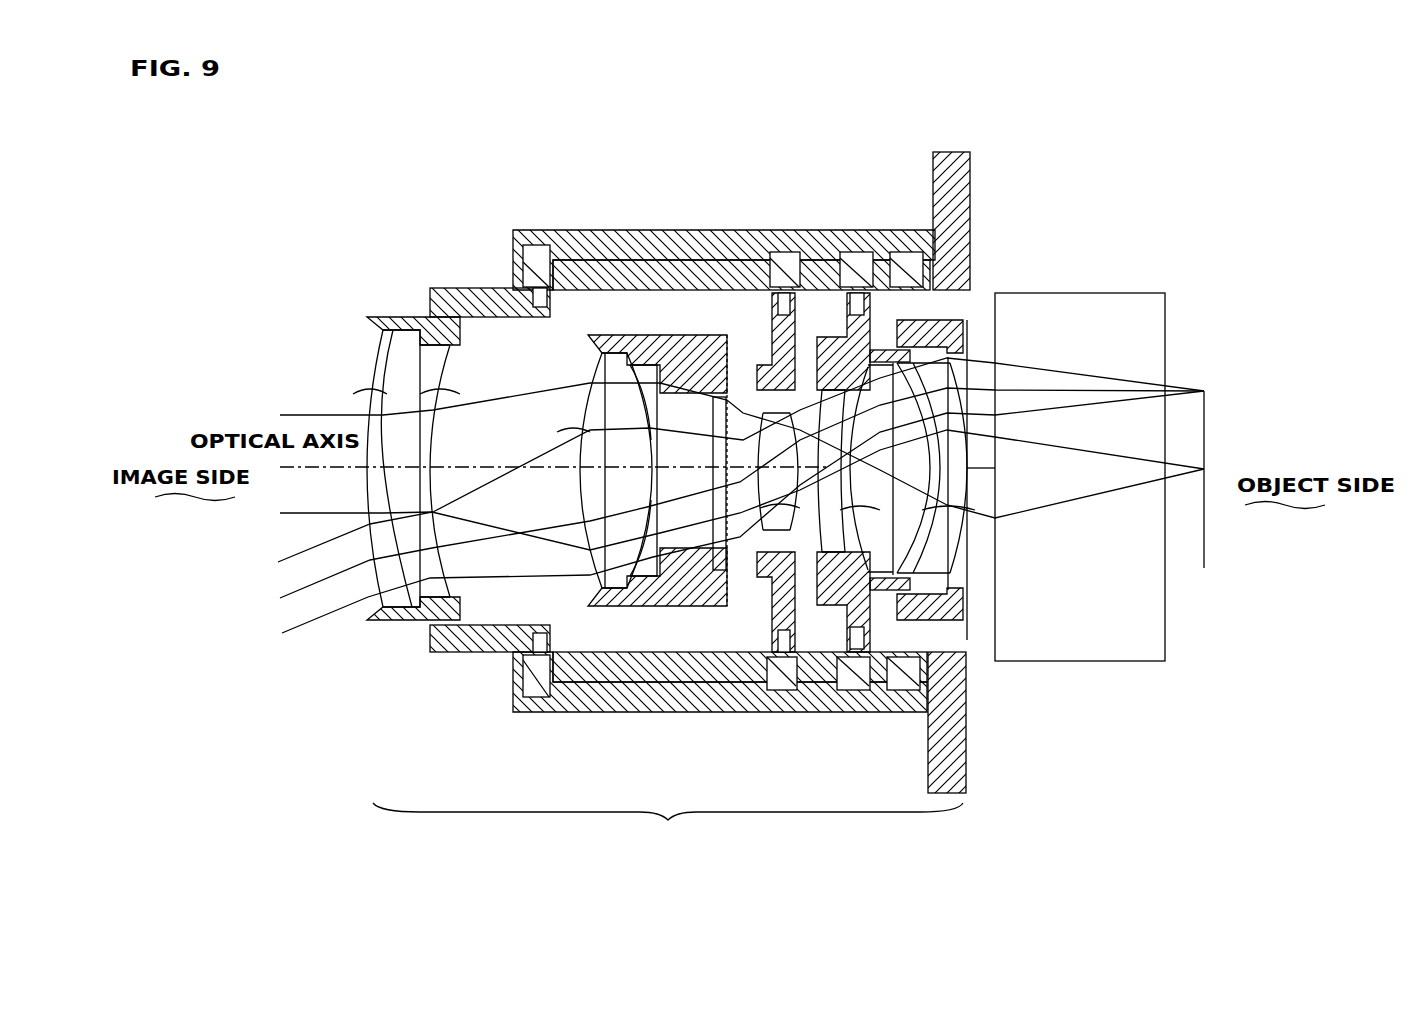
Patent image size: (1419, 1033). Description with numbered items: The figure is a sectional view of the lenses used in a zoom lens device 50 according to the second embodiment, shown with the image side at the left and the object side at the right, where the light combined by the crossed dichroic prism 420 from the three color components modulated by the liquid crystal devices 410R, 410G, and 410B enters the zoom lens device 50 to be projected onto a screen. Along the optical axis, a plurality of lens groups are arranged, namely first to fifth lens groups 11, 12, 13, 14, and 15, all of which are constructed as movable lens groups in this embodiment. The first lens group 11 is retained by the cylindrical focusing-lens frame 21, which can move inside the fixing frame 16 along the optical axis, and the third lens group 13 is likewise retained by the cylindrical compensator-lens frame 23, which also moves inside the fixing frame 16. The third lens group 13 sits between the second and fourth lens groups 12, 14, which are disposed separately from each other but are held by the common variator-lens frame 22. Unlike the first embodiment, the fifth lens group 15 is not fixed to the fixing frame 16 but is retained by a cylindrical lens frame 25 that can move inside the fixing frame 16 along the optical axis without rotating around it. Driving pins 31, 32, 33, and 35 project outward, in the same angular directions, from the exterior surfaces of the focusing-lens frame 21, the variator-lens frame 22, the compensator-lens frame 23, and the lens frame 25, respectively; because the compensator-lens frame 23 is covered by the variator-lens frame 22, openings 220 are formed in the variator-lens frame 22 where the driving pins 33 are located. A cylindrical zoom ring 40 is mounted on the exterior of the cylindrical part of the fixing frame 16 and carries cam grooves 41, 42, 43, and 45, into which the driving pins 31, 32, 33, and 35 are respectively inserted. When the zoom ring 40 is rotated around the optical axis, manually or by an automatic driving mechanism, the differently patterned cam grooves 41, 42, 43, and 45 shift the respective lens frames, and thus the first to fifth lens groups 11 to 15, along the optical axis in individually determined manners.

The first lens group 11 is at (413, 372).
The second lens group 12 is at (617, 357).
The third lens group 13 is at (930, 655).
The fourth lens group 14 is at (905, 603).
The fifth lens group 15 is at (955, 593).
The fixing frame 16 is at (753, 272).
The focusing-lens frame 21 is at (430, 617).
The variator-lens frame 22 is at (940, 312).
The compensator-lens frame 23 is at (758, 575).
The lens frame 25 is at (907, 615).
The driving pin 31 is at (480, 439).
The cam groove 41 is at (520, 250).
The driving pin 32 is at (876, 397).
The cam groove 42 is at (817, 290).
The driving pin 33 is at (811, 366).
The cam groove 43 is at (757, 230).
The driving pin 35 is at (962, 457).
The cam groove 45 is at (882, 230).
The zoom ring 40 is at (663, 230).
The zoom lens device 50 is at (668, 832).
The opening 220 is at (805, 340).
The crossed dichroic prism 420 is at (1090, 310).
The liquid crystal device 410R is at (1307, 446).
The liquid crystal device 410B is at (1307, 446).
The liquid crystal device 410G is at (1215, 383).